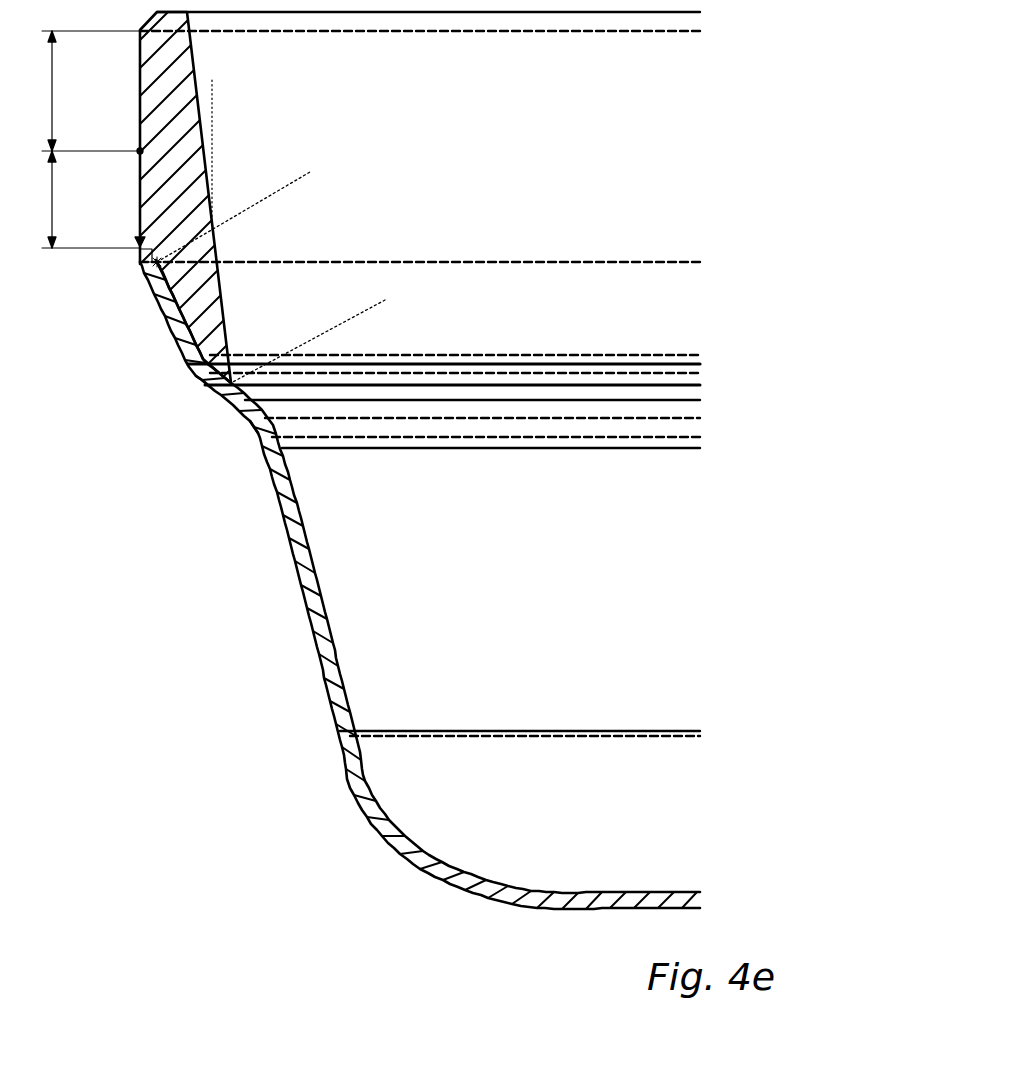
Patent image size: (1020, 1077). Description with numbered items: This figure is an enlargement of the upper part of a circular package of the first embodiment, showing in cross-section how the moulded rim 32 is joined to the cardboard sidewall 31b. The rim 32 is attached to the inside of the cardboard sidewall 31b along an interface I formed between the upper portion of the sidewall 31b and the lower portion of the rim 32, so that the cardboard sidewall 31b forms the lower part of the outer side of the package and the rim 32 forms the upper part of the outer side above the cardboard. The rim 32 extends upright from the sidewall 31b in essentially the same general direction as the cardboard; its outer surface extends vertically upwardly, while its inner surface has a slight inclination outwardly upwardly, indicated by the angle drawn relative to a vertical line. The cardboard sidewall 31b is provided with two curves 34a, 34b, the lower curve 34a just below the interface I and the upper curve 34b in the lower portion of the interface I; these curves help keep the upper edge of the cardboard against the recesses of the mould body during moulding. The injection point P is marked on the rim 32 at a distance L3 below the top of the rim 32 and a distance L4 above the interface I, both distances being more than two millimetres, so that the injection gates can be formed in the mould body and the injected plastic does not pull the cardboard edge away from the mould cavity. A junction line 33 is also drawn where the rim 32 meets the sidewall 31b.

The sidewall 31b is at (178, 341).
The moulded rim 32 is at (223, 318).
The junction between rim and side wall 33 is at (178, 294).
The curve 34a is at (250, 432).
The curve 34b is at (185, 386).
The injection point P is at (139, 151).
The distance L3 is at (80, 91).
The distance L4 is at (86, 206).
The interface I is at (310, 172).